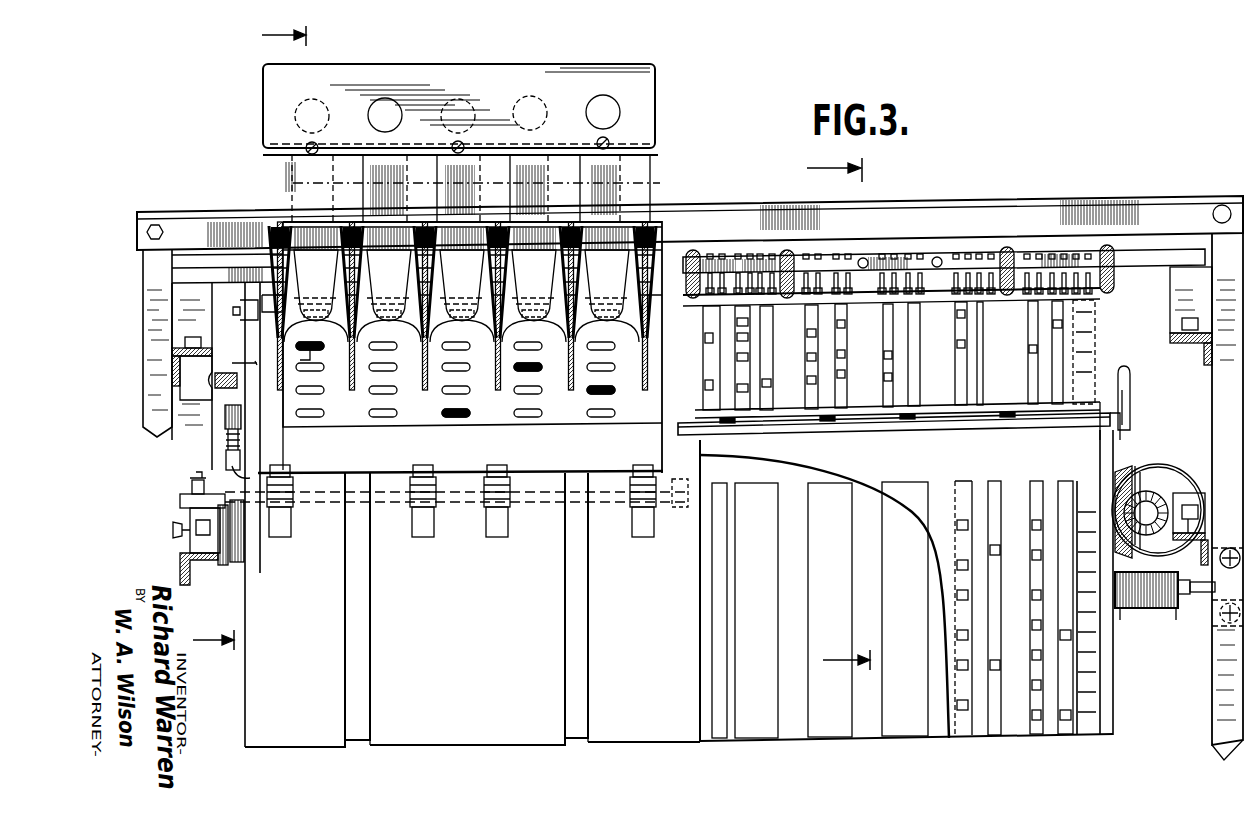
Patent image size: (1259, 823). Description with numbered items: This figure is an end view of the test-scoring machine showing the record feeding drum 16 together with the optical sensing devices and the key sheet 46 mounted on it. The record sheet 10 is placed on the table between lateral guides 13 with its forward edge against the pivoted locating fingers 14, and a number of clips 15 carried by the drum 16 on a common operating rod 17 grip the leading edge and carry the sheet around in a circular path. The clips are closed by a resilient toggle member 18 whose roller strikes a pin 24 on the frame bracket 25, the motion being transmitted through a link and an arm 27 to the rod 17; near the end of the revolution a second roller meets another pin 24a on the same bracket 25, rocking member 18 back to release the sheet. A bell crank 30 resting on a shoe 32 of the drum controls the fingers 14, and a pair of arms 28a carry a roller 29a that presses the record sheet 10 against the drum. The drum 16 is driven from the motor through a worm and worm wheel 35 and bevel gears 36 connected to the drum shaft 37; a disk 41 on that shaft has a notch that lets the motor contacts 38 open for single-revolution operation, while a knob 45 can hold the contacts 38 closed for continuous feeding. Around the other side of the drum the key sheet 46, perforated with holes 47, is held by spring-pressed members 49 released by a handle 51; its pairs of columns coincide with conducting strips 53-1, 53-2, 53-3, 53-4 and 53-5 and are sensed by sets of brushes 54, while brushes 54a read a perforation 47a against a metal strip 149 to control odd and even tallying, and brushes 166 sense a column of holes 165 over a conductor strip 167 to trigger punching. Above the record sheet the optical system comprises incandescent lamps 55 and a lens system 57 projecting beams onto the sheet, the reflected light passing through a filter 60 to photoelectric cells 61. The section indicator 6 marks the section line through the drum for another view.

The section line 6- 6 is at (842, 421).
The record sheet 10 is at (460, 470).
The lateral guides 13 is at (250, 290).
The locating fingers 14 is at (261, 339).
The clips 15 is at (288, 480).
The feeding drum 16 is at (440, 742).
The operating rod 17 is at (386, 500).
The member 18 is at (238, 475).
The pin 24 is at (212, 395).
The pin 24a is at (236, 466).
The bracket 25 is at (190, 441).
The arm 27 is at (236, 562).
The arms 28a is at (258, 300).
The roller 29a is at (282, 300).
The bell crank 30 is at (238, 306).
The shoe 32 is at (258, 569).
The worm and worm wheel 35 is at (1160, 612).
The bevel gears 36 is at (1145, 490).
The shaft 37 is at (1192, 490).
The contacts 38 is at (194, 484).
The disk 41 is at (222, 560).
The knob 45 is at (172, 529).
The key sheet 46 is at (1108, 440).
The perforations 47 is at (888, 375).
The perforation 47a is at (712, 345).
The spring-pressed members 49 is at (730, 427).
The handle 51 is at (1128, 368).
The strip of conducting material 53-1 is at (1048, 481).
The strip of conducting material 53-2 is at (980, 481).
The strip of conducting material 53-3 is at (904, 482).
The strip of conducting material 53-4 is at (826, 487).
The strip of conducting material 53-5 is at (748, 483).
The brushes 54 is at (830, 290).
The brushes 54a is at (735, 280).
The incandescent lamps 55 is at (388, 98).
The lens system 57 is at (293, 183).
The filter 60 is at (645, 325).
The photoelectric cell 61 is at (461, 334).
The metal strip 149 is at (720, 508).
The perforations 165 is at (1090, 318).
The brushes 166 is at (1085, 250).
The conductor strip 167 is at (1105, 666).